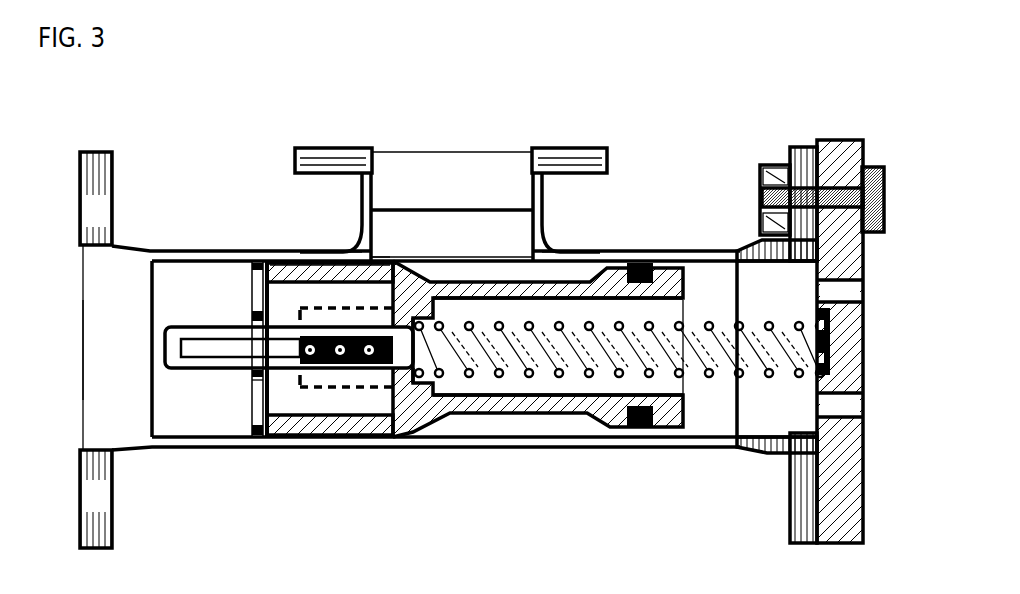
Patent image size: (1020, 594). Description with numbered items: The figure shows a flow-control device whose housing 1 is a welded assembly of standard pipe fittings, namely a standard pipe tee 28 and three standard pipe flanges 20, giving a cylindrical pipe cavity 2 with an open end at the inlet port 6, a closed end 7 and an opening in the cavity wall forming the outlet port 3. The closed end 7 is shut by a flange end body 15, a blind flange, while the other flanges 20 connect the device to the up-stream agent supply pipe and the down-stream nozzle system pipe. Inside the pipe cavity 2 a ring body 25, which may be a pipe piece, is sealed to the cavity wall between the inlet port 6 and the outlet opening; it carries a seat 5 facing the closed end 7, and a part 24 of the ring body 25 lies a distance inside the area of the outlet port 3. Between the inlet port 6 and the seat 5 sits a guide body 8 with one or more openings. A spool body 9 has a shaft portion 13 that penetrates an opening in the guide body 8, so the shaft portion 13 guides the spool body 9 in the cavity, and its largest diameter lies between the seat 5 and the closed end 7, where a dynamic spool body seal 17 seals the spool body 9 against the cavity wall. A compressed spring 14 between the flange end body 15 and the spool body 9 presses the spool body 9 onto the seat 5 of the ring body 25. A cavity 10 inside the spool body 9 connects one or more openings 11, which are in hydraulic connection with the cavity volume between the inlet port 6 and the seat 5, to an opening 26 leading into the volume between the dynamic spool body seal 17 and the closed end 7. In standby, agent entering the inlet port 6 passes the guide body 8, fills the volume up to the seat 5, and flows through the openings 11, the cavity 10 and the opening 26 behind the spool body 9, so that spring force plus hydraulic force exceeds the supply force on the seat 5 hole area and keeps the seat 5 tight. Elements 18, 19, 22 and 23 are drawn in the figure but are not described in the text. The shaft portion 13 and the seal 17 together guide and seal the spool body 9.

The housing 1 is at (250, 448).
The pipe cavity 2 is at (213, 287).
The outlet port 3 is at (477, 243).
The seat 5 is at (357, 425).
The inlet port 6 is at (92, 340).
The closed end 7 is at (793, 405).
The guide body 8 is at (248, 383).
The spool body 9 is at (423, 403).
The spool body cavity 10 is at (570, 383).
The openings in the spool body 11 is at (320, 372).
The shaft portion 13 is at (193, 327).
The spring 14 is at (549, 353).
The flange end body 15 is at (843, 145).
The dynamic spool body seal 17 is at (643, 447).
The bolt 18 is at (762, 190).
The nut 19 is at (762, 190).
The flanges 20 is at (330, 148).
The guide 22 is at (412, 448).
The partition wall 23 is at (350, 270).
The part of the ring body 24 is at (380, 253).
The ring body 25 is at (300, 258).
The opening 26 is at (687, 308).
The standard pipe tee 28 is at (553, 230).